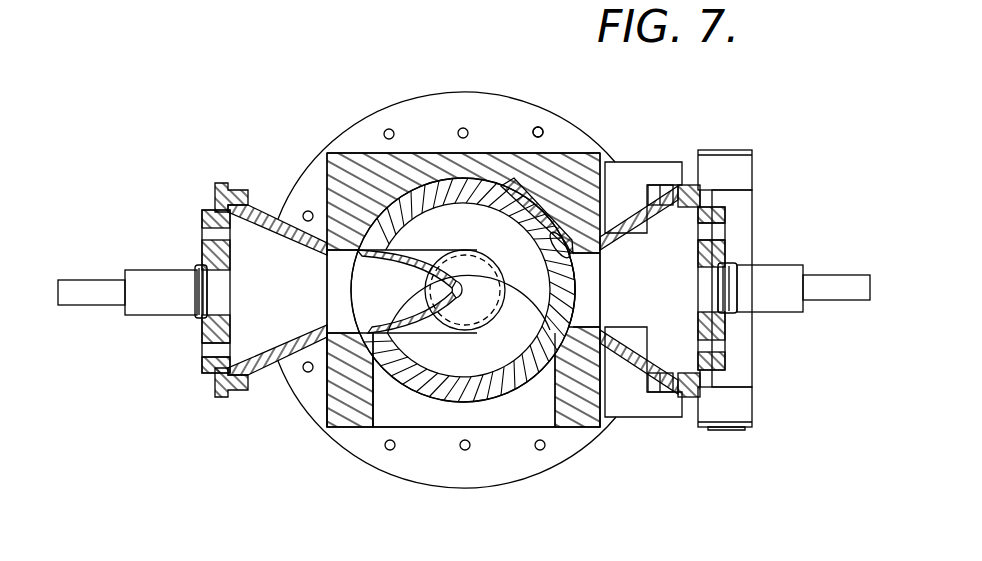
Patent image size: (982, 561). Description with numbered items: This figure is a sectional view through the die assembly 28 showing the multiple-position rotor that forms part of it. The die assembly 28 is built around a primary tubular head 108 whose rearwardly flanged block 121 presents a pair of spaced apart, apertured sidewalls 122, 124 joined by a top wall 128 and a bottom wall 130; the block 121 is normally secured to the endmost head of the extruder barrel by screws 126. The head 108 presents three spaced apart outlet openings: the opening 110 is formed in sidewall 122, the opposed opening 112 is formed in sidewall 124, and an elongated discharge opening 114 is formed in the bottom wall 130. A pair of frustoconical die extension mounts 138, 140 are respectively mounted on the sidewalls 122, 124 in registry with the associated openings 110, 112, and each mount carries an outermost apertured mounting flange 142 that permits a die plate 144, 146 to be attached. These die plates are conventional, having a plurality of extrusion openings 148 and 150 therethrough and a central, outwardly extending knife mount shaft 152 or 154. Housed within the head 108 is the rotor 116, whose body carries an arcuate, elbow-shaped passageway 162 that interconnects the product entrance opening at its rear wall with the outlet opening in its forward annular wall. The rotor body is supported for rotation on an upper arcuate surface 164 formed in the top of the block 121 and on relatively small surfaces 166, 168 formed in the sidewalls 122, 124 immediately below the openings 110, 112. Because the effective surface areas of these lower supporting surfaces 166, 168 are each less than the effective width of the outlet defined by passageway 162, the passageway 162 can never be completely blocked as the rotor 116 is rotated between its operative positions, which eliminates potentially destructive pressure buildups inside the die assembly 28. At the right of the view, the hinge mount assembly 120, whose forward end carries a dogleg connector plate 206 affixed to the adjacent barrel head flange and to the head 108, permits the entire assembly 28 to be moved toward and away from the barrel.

The die assembly 28 is at (774, 400).
The primary tubular head 108 is at (372, 150).
The outlet opening 110 is at (343, 318).
The outlet opening 112 is at (590, 322).
The discharge opening 114 is at (390, 418).
The rotor 116 is at (512, 398).
The hinge mount assembly 120 is at (756, 149).
The rearwardly flanged block 121 is at (510, 153).
The sidewall 122 is at (330, 398).
The sidewall 124 is at (577, 417).
The screws 126 is at (544, 133).
The top wall 128 is at (455, 153).
The bottom wall 130 is at (548, 428).
The frustoconical die extension mount 138 is at (270, 222).
The frustoconical die extension mount 140 is at (636, 372).
The apertured mounting flange 142 is at (240, 190).
The die plate 144 is at (206, 257).
The die plate 146 is at (726, 328).
The extrusion openings 148 is at (207, 350).
The extrusion openings 150 is at (722, 232).
The knife mount shaft 152 is at (136, 275).
The knife mount shaft 154 is at (790, 305).
The arcuate elbow-shaped passageway 162 is at (430, 252).
The upper arcuate surface 164 is at (574, 268).
The supporting surface 166 is at (412, 365).
The supporting surface 168 is at (545, 335).
The dogleg connector plate 206 is at (628, 164).